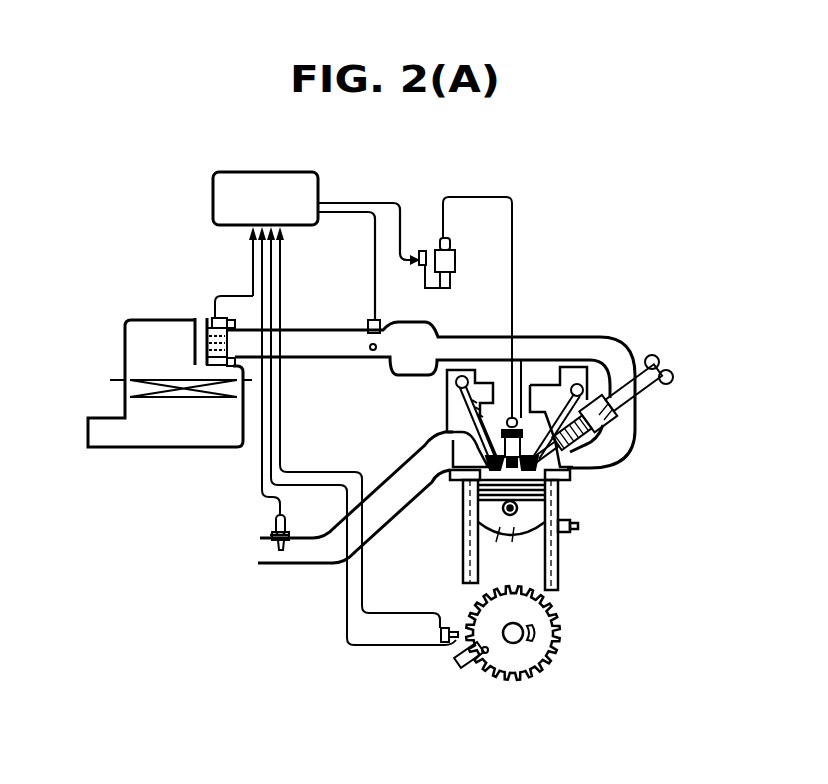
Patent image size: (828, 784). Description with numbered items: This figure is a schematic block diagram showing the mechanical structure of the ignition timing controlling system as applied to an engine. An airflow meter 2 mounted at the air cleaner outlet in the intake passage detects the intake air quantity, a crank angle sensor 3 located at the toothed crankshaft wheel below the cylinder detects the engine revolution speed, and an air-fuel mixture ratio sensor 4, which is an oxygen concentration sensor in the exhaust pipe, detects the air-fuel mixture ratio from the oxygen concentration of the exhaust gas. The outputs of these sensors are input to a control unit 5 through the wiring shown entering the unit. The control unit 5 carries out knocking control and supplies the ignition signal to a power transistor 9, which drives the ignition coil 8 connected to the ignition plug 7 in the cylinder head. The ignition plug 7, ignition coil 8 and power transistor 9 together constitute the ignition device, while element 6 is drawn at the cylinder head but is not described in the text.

The airflow meter 2 is at (212, 322).
The crank angle sensor 3 is at (440, 645).
The air-fuel mixture ratio sensor 4 is at (270, 527).
The control unit 5 is at (300, 186).
The spark plug 6 is at (637, 421).
The ignition plug 7 is at (517, 418).
The ignition coil 8 is at (452, 262).
The power transistor 9 is at (421, 251).